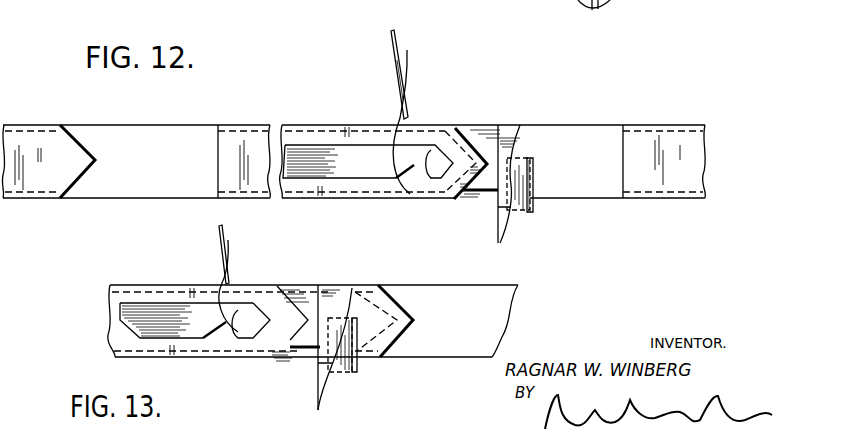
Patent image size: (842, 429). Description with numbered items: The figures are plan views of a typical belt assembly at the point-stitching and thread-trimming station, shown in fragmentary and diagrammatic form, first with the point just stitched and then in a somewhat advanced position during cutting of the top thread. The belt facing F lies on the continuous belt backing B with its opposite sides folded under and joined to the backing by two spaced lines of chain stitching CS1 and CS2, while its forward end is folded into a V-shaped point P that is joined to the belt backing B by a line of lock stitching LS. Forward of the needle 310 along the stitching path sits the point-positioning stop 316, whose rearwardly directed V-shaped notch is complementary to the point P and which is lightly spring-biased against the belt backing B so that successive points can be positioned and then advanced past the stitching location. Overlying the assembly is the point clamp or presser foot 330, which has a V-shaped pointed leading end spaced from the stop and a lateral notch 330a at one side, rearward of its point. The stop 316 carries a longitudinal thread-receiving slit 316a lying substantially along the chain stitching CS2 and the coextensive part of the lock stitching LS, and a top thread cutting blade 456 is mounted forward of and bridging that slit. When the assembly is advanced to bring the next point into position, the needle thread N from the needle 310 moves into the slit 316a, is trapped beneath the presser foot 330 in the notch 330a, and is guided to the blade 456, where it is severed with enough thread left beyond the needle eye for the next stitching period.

In FIG. 12, the belt backing B is at (110, 196).
In FIG. 13, the belt backing B is at (518, 290).
In FIG. 12, the belt facing F is at (25, 145).
In FIG. 12, the V-shaped point P is at (76, 156).
In FIG. 13, the V-shaped point P is at (409, 299).
In FIG. 12, the line of chain stitching CS1 is at (241, 128).
In FIG. 13, the line of chain stitching CS1 is at (114, 290).
In FIG. 12, the line of chain stitching CS2 is at (341, 196).
In FIG. 13, the line of chain stitching CS2 is at (132, 352).
In FIG. 12, the line of lock stitching LS is at (452, 132).
In FIG. 13, the line of lock stitching LS is at (399, 330).
In FIG. 12, the needle thread N is at (410, 52).
In FIG. 13, the needle thread N is at (231, 246).
In FIG. 12, the needle 310 is at (393, 32).
In FIG. 13, the needle 310 is at (220, 228).
In FIG. 12, the point clamp or presser foot 330 is at (300, 147).
In FIG. 13, the point clamp or presser foot 330 is at (120, 318).
In FIG. 12, the lateral notch 330a is at (417, 174).
In FIG. 13, the lateral notch 330a is at (226, 336).
In FIG. 12, the point-positioning stop 316 is at (498, 153).
In FIG. 13, the point-positioning stop 316 is at (305, 294).
In FIG. 12, the thread-receiving slit 316a is at (481, 196).
In FIG. 13, the thread-receiving slit 316a is at (283, 356).
In FIG. 12, the top thread cutting blade 456 is at (532, 212).
In FIG. 13, the top thread cutting blade 456 is at (347, 372).